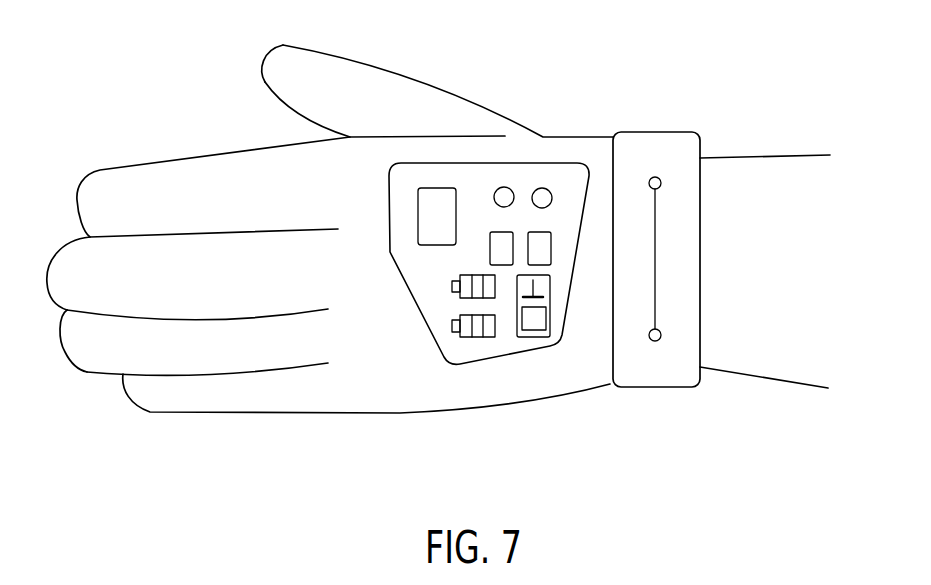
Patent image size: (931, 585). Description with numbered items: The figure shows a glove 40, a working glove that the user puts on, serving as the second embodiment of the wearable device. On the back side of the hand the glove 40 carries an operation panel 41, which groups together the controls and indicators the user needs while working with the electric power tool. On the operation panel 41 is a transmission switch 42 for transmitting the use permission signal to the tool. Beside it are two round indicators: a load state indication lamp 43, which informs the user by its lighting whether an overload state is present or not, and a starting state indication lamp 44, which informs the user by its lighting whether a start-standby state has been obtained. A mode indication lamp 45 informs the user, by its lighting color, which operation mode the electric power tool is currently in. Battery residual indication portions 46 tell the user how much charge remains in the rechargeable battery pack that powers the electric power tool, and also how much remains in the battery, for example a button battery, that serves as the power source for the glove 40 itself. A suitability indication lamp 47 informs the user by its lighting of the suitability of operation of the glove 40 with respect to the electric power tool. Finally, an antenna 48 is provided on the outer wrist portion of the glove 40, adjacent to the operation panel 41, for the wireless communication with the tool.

The glove 40 is at (130, 138).
The operation panel 41 is at (478, 176).
The transmission switch 42 is at (438, 205).
The load state indication lamp 43 is at (504, 195).
The starting state indication lamp 44 is at (542, 195).
The mode indication lamp 45 is at (542, 248).
The battery residual indication portions 46 is at (477, 327).
The suitability indication lamp 47 is at (538, 306).
The antenna 48 is at (657, 223).